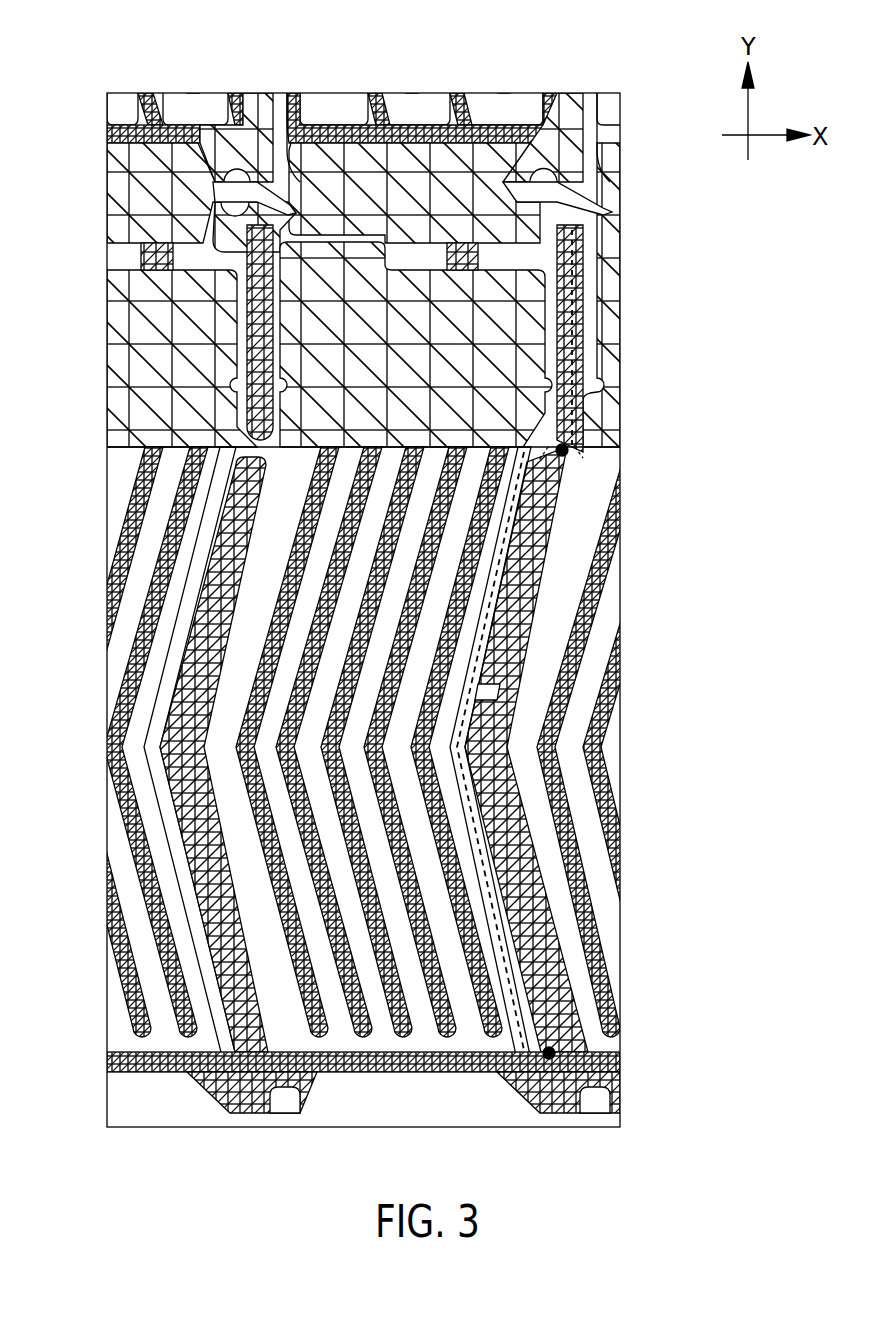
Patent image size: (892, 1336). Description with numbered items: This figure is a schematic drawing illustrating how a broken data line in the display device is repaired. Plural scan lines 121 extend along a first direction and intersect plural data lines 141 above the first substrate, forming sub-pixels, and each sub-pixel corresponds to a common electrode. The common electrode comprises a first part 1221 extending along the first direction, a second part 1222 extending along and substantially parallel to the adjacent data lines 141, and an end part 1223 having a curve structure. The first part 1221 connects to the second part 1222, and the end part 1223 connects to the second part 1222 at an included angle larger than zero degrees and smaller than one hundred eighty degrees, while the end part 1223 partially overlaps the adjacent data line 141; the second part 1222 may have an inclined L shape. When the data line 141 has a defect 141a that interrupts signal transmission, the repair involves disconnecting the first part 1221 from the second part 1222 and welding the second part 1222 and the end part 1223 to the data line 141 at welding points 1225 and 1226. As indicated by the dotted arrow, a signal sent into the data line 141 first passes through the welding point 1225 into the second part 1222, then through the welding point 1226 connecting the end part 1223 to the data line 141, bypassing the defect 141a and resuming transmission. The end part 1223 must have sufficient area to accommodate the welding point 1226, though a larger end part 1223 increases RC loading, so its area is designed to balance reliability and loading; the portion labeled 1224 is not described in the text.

The scan line 121 is at (608, 187).
The first part of common electrode 1221 is at (612, 333).
The second part of common electrode 1222 is at (507, 568).
The end part of common electrode 1223 is at (557, 1076).
The branch electrode 1224 is at (565, 530).
The welding point 1225 is at (568, 450).
The welding point 1226 is at (556, 1056).
The data line 141 is at (183, 688).
The defect 141a is at (497, 695).